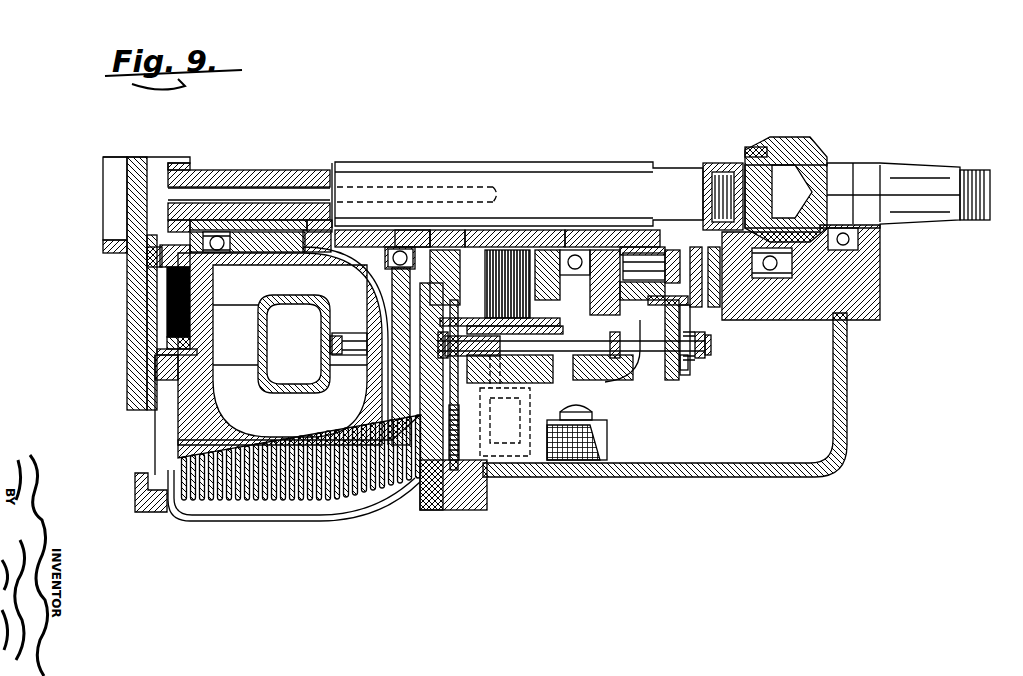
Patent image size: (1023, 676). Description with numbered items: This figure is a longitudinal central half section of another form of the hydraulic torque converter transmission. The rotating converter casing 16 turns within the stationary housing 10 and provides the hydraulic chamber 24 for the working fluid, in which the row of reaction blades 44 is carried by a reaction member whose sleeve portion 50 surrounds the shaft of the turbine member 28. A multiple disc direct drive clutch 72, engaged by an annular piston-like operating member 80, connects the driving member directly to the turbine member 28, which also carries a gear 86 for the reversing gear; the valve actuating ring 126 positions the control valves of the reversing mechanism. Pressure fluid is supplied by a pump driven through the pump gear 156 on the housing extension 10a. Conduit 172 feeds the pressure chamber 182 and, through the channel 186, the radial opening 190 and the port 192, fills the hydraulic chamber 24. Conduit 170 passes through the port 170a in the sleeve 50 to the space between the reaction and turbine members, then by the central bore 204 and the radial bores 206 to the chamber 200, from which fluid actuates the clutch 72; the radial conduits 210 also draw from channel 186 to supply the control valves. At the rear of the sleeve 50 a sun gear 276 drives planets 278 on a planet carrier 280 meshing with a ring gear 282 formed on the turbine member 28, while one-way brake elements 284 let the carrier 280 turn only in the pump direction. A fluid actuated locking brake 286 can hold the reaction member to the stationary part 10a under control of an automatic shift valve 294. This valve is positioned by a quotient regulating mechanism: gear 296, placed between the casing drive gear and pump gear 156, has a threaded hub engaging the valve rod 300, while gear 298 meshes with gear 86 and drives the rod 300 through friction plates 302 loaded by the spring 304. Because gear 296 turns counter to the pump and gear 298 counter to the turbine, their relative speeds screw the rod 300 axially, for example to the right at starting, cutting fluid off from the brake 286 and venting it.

The stationary housing 10 is at (560, 122).
The stationary housing extension 10a is at (603, 262).
The rotating converter casing 16 is at (193, 443).
The hydraulic chamber 24 is at (302, 424).
The turbine member 28 is at (590, 173).
The reaction blades 44 is at (347, 340).
The sleeve portion of reaction member 50 is at (588, 230).
The direct drive clutch 72 is at (150, 327).
The clutch operating member 80 is at (160, 312).
The turbine gear 86 is at (687, 306).
The valve actuating ring 126 is at (690, 378).
The pump gear 156 is at (449, 510).
The pressure conduit 170 is at (520, 230).
The port 170a is at (447, 230).
The pressure conduit 172 is at (414, 258).
The pressure chamber 182 is at (415, 230).
The longitudinal channel 186 is at (690, 240).
The radial opening 190 is at (367, 232).
The port 192 is at (308, 252).
The chamber 200 is at (152, 190).
The central bore 204 is at (215, 192).
The radial bore 206 is at (478, 208).
The radial conduit 210 is at (700, 230).
The sun gear 276 is at (650, 230).
The planet gear 278 is at (634, 250).
The planet carrier 280 is at (578, 383).
The ring gear 282 is at (638, 380).
The one-way brake elements 284 is at (571, 350).
The locking brake 286 is at (500, 250).
The automatic shift valve 294 is at (610, 386).
The regulating gear 296 is at (430, 388).
The regulating gear 298 is at (686, 388).
The valve rod 300 is at (703, 350).
The friction plates 302 is at (684, 370).
The spring 304 is at (711, 338).